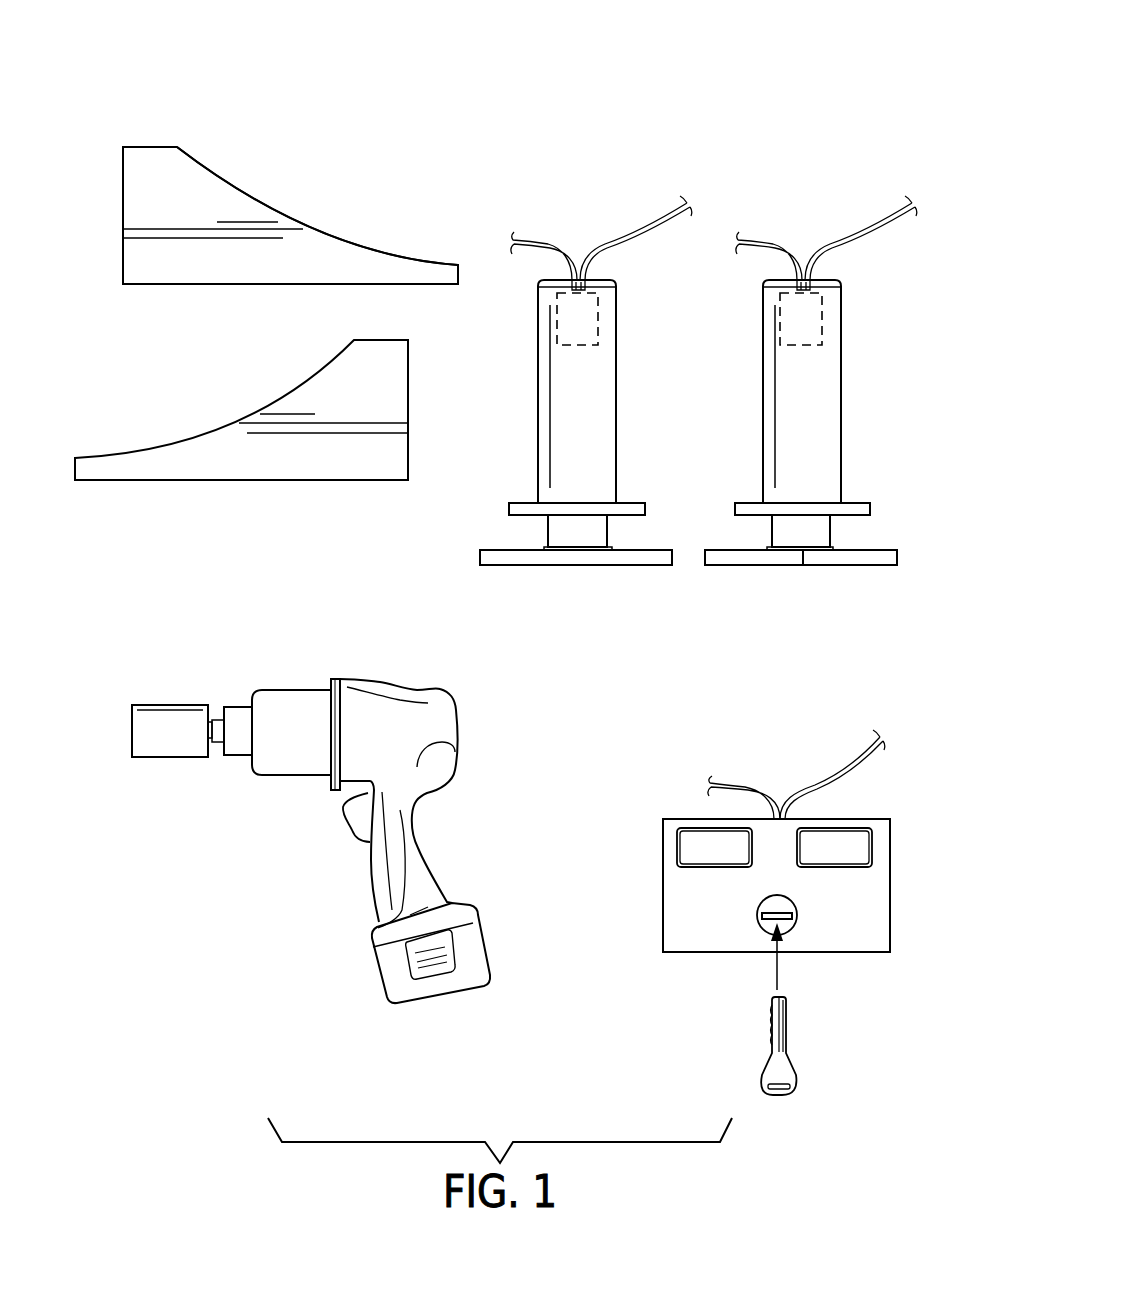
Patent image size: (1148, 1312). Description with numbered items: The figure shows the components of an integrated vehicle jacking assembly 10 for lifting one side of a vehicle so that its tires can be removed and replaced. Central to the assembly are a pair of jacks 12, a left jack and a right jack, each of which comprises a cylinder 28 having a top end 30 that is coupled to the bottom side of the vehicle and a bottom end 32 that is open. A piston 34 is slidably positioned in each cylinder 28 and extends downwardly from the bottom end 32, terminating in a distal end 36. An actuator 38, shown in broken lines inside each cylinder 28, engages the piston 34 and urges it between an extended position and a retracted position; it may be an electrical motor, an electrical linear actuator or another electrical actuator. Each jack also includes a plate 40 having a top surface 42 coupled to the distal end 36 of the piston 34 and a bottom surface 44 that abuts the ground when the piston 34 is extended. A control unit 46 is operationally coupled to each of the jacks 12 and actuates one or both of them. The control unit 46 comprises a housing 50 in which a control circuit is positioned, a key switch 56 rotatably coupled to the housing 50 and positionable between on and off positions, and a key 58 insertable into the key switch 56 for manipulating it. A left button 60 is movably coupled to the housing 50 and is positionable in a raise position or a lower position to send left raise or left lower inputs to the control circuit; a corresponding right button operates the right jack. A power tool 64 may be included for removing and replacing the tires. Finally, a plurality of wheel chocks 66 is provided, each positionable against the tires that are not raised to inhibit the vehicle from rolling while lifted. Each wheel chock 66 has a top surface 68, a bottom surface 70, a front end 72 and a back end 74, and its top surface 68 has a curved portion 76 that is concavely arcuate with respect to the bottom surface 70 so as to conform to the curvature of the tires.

The integrated vehicle jacking assembly 10 is at (775, 100).
The jacks 12 is at (721, 377).
The cylinder 28 is at (842, 358).
The top end 30 is at (822, 278).
The bottom end 32 is at (808, 515).
The piston 34 is at (770, 535).
The distal end 36 is at (803, 565).
The actuator 38 is at (822, 312).
The plate 40 is at (898, 557).
The top surface 42 is at (723, 548).
The bottom surface 44 is at (767, 565).
The control unit 46 is at (766, 912).
The housing 50 is at (663, 893).
The key switch 56 is at (792, 926).
The key 58 is at (772, 1067).
The left button 60 is at (683, 830).
The power tool 64 is at (423, 694).
The wheel chocks 66 is at (123, 147).
The top surface 68 is at (168, 147).
The bottom surface 70 is at (219, 285).
The front end 72 is at (123, 214).
The back end 74 is at (456, 265).
The curved portion 76 is at (306, 232).